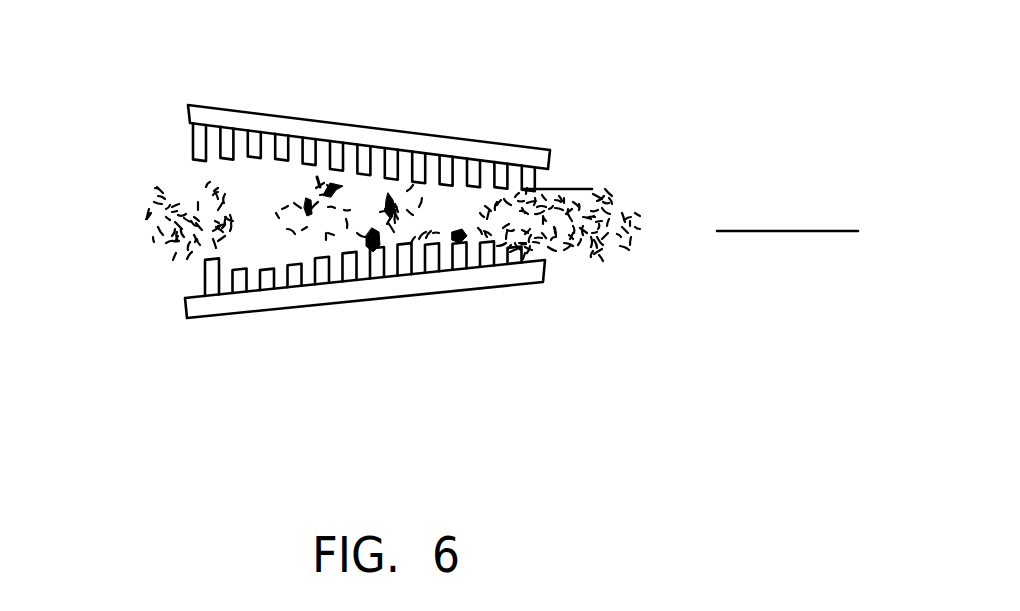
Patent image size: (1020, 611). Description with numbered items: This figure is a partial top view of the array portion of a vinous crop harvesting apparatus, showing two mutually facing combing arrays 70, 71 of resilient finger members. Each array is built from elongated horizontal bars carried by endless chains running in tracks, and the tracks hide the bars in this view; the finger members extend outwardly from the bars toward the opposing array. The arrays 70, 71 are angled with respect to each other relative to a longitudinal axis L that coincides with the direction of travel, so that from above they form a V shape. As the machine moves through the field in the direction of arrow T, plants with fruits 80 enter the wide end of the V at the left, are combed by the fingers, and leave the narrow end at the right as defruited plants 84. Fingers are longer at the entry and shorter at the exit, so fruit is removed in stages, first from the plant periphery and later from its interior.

The array 70 is at (430, 103).
The array 71 is at (428, 330).
The plants with fruits 80 is at (152, 220).
The defruited plants 84 is at (622, 237).
The direction of travel T is at (205, 343).
The longitudinal axis L is at (768, 232).